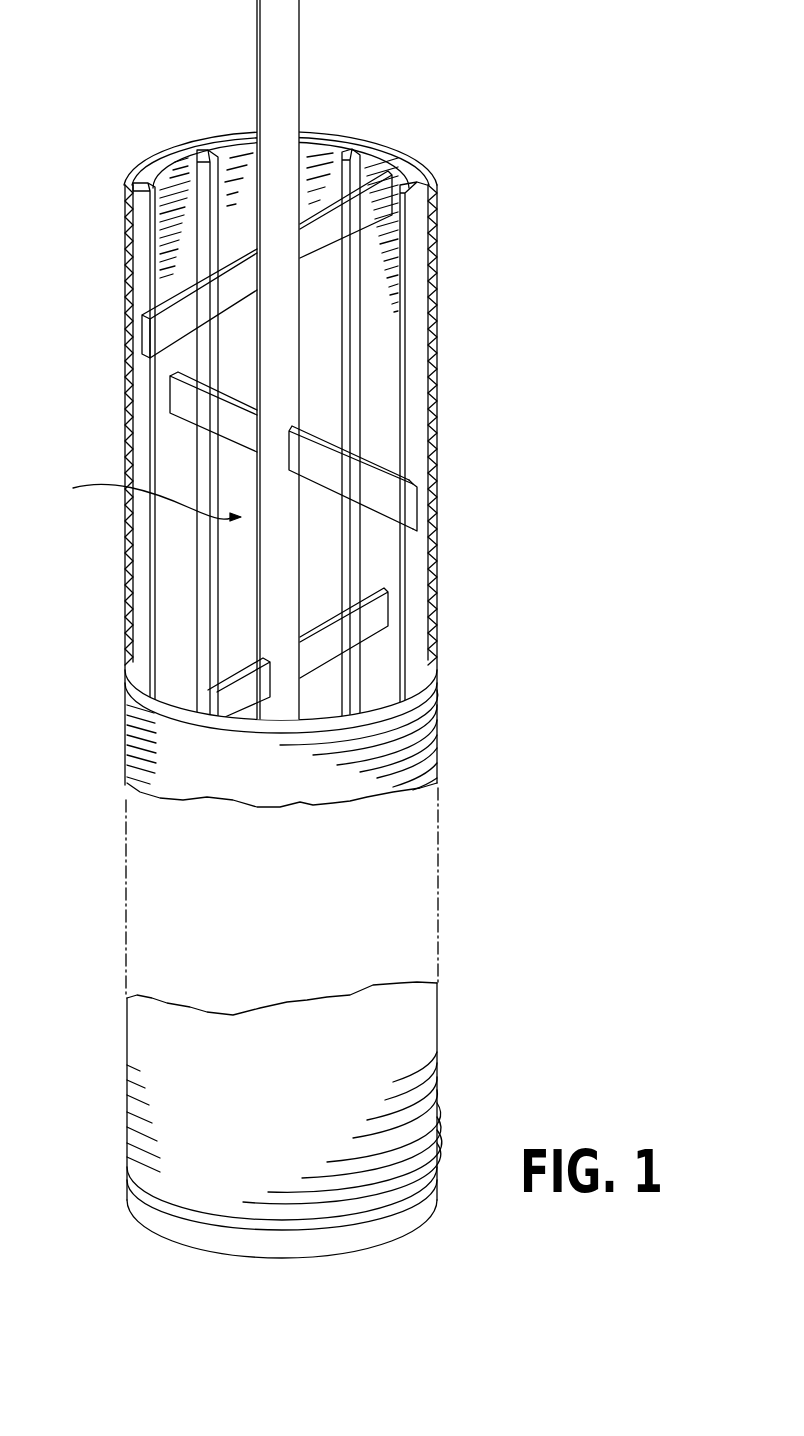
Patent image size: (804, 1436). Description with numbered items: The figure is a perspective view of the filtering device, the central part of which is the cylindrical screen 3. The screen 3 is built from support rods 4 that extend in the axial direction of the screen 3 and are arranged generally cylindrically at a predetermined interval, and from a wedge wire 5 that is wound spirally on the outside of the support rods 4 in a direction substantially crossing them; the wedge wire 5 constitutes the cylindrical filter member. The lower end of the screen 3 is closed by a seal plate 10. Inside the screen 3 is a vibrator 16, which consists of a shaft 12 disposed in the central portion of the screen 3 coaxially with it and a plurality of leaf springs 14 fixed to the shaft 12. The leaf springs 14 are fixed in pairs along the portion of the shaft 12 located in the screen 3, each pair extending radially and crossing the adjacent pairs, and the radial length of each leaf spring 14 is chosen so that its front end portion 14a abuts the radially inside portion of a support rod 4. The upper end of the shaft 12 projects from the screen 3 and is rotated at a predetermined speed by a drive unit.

The screen 3 is at (296, 403).
The support rods 4 is at (417, 365).
The wedge wire 5 is at (428, 277).
The seal plate 10 is at (424, 1220).
The shaft 12 is at (290, 68).
The leaf springs 14 is at (371, 196).
The front end portion 14a is at (402, 503).
The vibrator 16 is at (138, 497).